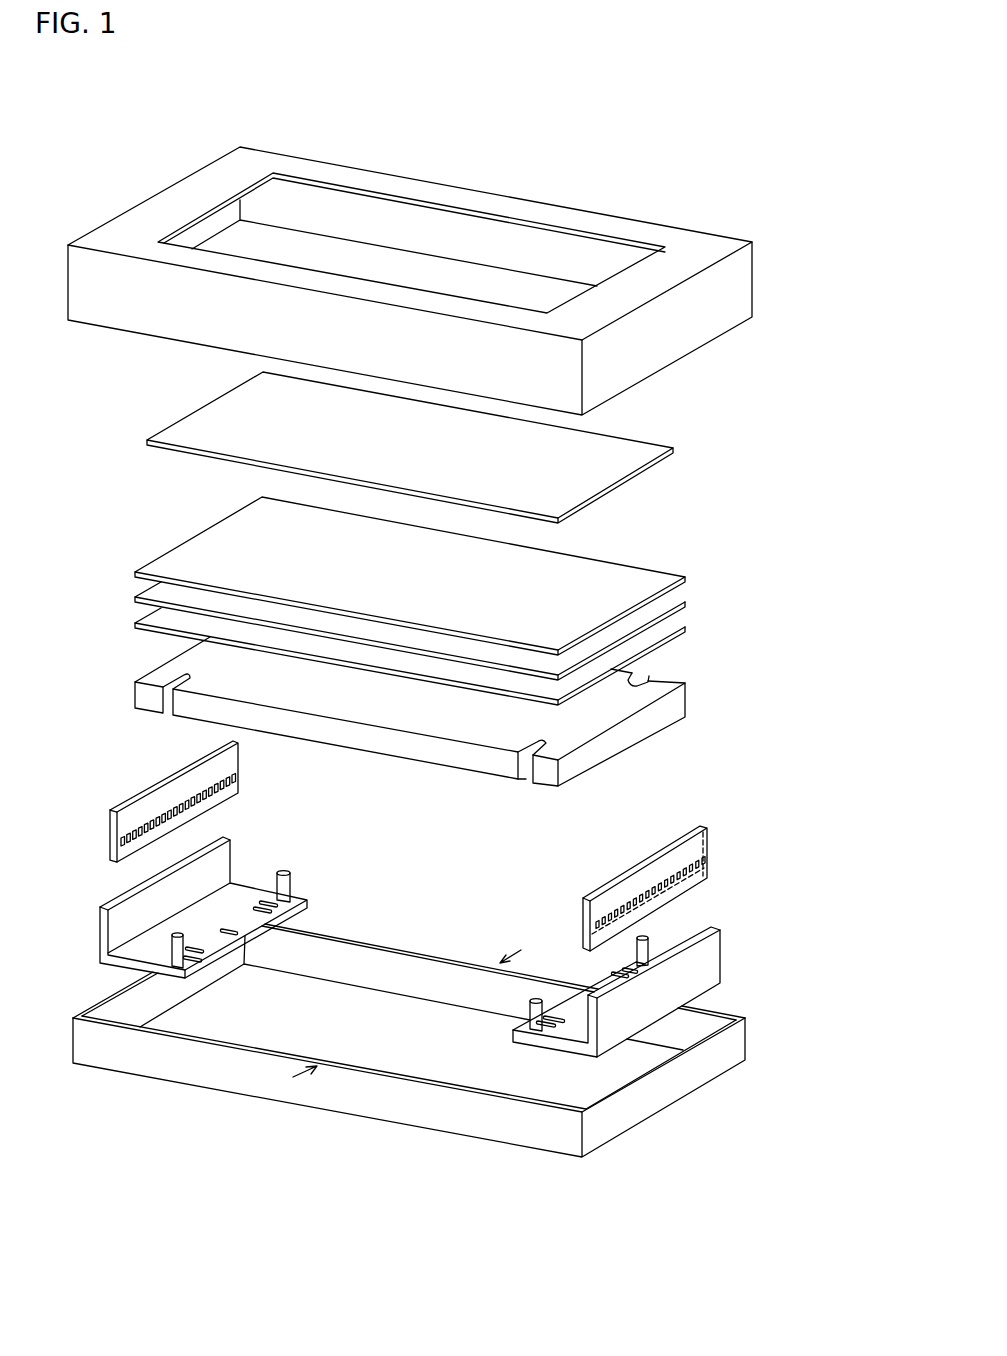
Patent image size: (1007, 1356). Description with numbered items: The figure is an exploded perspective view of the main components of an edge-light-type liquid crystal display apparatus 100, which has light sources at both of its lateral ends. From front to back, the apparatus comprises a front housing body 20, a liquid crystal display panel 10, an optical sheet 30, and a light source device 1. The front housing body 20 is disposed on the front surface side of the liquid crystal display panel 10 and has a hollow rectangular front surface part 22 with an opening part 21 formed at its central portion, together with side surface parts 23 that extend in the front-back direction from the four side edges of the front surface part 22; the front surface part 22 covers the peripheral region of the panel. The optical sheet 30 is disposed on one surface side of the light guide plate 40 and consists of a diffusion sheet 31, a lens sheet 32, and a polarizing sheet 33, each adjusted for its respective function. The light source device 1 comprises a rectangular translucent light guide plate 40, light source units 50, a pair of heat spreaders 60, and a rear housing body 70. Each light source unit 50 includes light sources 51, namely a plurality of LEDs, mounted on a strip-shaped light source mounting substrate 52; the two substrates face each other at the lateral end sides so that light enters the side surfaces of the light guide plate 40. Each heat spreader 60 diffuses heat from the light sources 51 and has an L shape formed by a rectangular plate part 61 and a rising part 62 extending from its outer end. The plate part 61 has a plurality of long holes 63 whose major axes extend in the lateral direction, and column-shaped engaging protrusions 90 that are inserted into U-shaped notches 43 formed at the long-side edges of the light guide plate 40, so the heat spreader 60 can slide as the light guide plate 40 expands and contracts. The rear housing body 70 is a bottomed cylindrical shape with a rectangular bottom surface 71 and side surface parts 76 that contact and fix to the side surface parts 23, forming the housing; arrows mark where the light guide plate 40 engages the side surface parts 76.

The liquid crystal display apparatus 100 is at (746, 114).
The light source device 1 is at (808, 676).
The liquid crystal display panel 10 is at (643, 485).
The front housing body 20 is at (757, 271).
The opening part 21 is at (486, 234).
The front surface part 22 is at (705, 245).
The side surface parts 23 is at (710, 318).
The optical sheet 30 is at (126, 559).
The diffusion sheet 31 is at (670, 652).
The lens sheet 32 is at (683, 612).
The polarizing sheet 33 is at (683, 585).
The light guide plate 40 is at (682, 703).
The notch 43 is at (160, 682).
The light source unit 50 is at (78, 697).
The light source 51 is at (160, 812).
The light source mounting substrate 52 is at (130, 812).
The heat spreader 60 is at (722, 950).
The plate part 61 is at (629, 960).
The rising part 62 is at (610, 1030).
The long hole 63 is at (272, 903).
The rear housing body 70 is at (747, 1040).
The bottom surface 71 is at (238, 1027).
The side surface parts 76 is at (492, 1127).
The engaging protrusion 90 is at (284, 876).